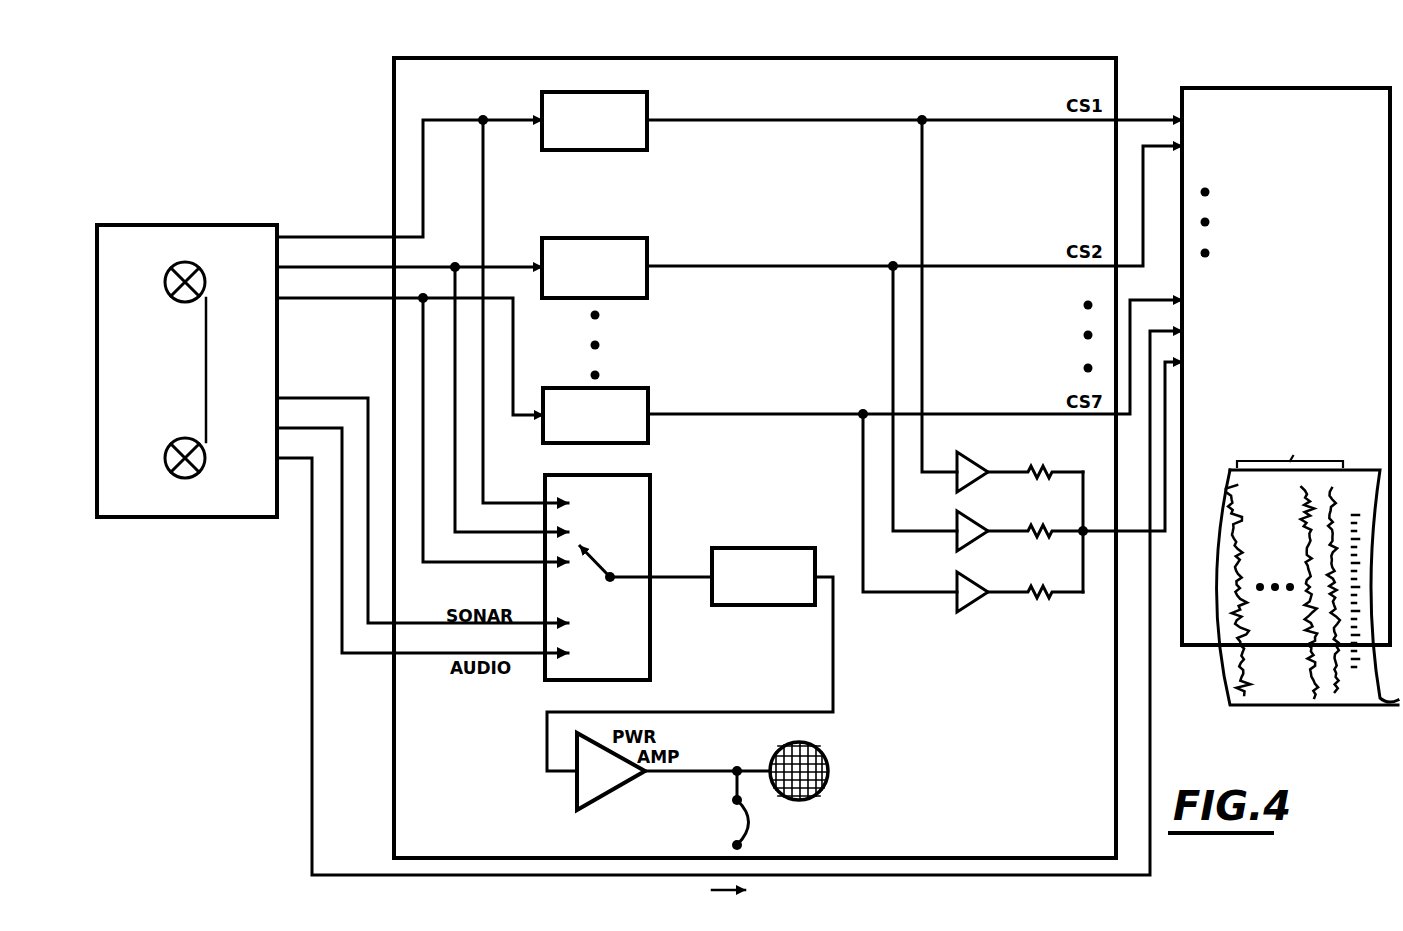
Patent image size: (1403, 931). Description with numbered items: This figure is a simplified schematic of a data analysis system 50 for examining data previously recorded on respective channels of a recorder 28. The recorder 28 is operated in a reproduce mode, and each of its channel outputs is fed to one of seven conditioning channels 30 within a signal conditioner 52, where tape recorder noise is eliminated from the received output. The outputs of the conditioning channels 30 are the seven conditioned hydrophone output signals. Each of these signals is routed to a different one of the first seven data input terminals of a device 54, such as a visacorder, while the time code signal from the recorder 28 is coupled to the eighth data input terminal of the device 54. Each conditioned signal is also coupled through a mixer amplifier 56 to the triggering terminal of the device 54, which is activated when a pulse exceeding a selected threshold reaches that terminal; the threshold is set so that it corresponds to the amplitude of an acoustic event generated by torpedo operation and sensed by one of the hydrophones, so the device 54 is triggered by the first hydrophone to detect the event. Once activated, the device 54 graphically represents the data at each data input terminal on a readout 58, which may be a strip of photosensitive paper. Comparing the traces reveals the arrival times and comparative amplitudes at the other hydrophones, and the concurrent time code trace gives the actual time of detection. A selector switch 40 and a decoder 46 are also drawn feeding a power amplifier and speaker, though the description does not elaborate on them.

The recorder 28 is at (243, 225).
The conditioning channel 30 is at (608, 133).
The selector switch 40 is at (640, 505).
The decoder 46 is at (776, 591).
The data analysis system 50 is at (300, 104).
The signal conditioner 52 is at (756, 58).
The device 54 is at (1372, 115).
The mixer amplifier 56 is at (980, 468).
The readout 58 is at (1311, 707).